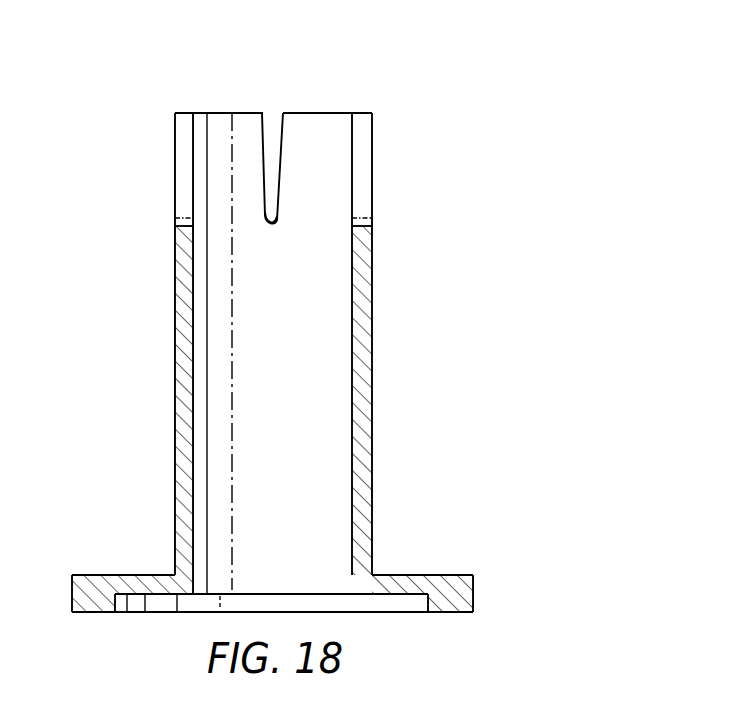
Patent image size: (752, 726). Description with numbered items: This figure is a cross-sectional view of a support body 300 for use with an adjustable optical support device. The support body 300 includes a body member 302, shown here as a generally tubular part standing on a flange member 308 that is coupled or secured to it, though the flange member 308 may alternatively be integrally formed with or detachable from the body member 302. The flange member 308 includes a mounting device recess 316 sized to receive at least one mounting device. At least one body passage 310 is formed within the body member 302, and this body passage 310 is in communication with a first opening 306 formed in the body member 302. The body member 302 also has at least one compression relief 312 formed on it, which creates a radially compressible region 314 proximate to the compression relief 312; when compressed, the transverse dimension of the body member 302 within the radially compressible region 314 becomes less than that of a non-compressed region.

The support body 300 is at (506, 103).
The body member 302 is at (373, 378).
The first opening 306 is at (353, 112).
The flange member 308 is at (473, 575).
The body passage 310 is at (272, 120).
The compression relief 312 is at (278, 226).
The radially compressible region 314 is at (160, 113).
The mounting device recess 316 is at (153, 600).